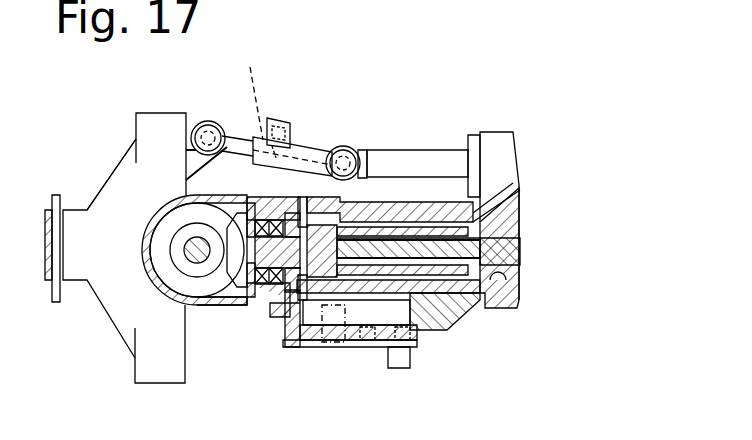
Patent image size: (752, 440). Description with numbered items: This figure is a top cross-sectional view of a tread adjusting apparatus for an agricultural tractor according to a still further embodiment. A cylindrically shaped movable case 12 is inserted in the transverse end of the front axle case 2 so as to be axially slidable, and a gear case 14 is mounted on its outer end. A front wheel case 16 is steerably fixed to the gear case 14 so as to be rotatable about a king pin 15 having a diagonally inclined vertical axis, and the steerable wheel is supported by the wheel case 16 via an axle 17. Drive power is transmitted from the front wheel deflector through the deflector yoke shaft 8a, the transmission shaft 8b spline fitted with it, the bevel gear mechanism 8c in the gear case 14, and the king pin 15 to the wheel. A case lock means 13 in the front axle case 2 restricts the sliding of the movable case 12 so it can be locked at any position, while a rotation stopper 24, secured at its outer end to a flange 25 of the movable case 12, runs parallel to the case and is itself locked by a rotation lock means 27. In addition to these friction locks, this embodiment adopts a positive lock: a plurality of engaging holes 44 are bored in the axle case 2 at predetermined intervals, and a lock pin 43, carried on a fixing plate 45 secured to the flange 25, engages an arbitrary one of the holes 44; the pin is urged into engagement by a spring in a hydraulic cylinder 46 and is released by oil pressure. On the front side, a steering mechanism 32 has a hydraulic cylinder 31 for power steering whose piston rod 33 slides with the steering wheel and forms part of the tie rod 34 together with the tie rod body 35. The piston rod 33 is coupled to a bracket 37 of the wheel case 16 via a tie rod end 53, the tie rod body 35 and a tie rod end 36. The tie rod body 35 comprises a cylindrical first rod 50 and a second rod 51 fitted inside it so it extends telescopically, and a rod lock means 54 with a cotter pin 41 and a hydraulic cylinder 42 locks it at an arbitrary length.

The front axle case 2 is at (473, 295).
The deflector yoke shaft 8a is at (502, 270).
The transmission shaft 8b is at (455, 285).
The bevel gear mechanism 8c is at (234, 294).
The movable case 12 is at (412, 285).
The case lock means 13 is at (385, 197).
The gear case 14 is at (201, 306).
The king pin 15 is at (188, 260).
The front wheel case 16 is at (145, 188).
The axle 17 is at (53, 270).
The rotation stopper 24 is at (393, 318).
The flange 25 is at (292, 341).
The rotation lock means 27 is at (320, 310).
The hydraulic cylinder 31 is at (492, 148).
The steering mechanism 32 is at (510, 122).
The piston rod 33 is at (440, 163).
The tie rod 34 is at (415, 111).
The tie rod body 35 is at (308, 140).
The tie rod end 36 is at (208, 121).
The bracket 37 is at (185, 143).
The cotter pin 41 is at (249, 93).
The hydraulic cylinder 42 is at (283, 127).
The lock pin 43 is at (402, 335).
The engaging holes 44 is at (373, 335).
The fixing plate 45 is at (312, 347).
The hydraulic cylinder 46 is at (400, 357).
The first rod 50 is at (327, 146).
The second rod 51 is at (240, 140).
The tie rod end 53 is at (350, 150).
The rod lock means 54 is at (277, 120).